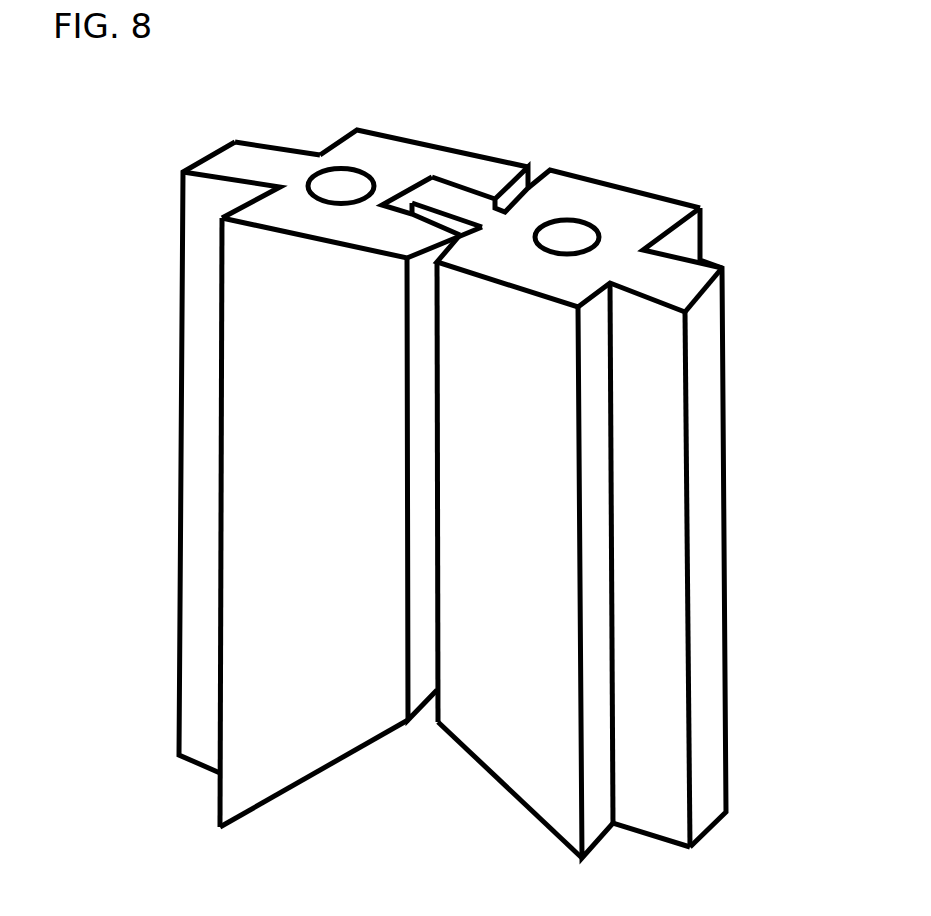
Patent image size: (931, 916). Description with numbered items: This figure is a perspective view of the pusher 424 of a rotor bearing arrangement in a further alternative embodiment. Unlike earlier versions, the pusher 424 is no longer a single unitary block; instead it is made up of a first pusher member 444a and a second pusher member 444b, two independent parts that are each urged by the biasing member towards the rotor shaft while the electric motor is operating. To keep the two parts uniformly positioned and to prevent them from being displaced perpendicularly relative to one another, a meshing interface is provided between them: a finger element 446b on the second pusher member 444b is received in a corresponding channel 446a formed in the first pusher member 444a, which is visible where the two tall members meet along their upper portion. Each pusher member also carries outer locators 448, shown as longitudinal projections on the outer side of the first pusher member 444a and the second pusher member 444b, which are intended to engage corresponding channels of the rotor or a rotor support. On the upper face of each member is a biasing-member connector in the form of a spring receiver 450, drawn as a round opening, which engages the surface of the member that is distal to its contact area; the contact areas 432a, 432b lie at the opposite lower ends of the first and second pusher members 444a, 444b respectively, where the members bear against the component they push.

The pusher 424 is at (717, 112).
The first pusher member 444a is at (285, 464).
The second pusher member 444b is at (651, 527).
The channel 446a is at (409, 184).
The finger element 446b is at (445, 196).
The outer locator 448 is at (232, 148).
The spring receiver 450 is at (343, 168).
The contact area 432a is at (313, 768).
The contact area 432b is at (497, 777).